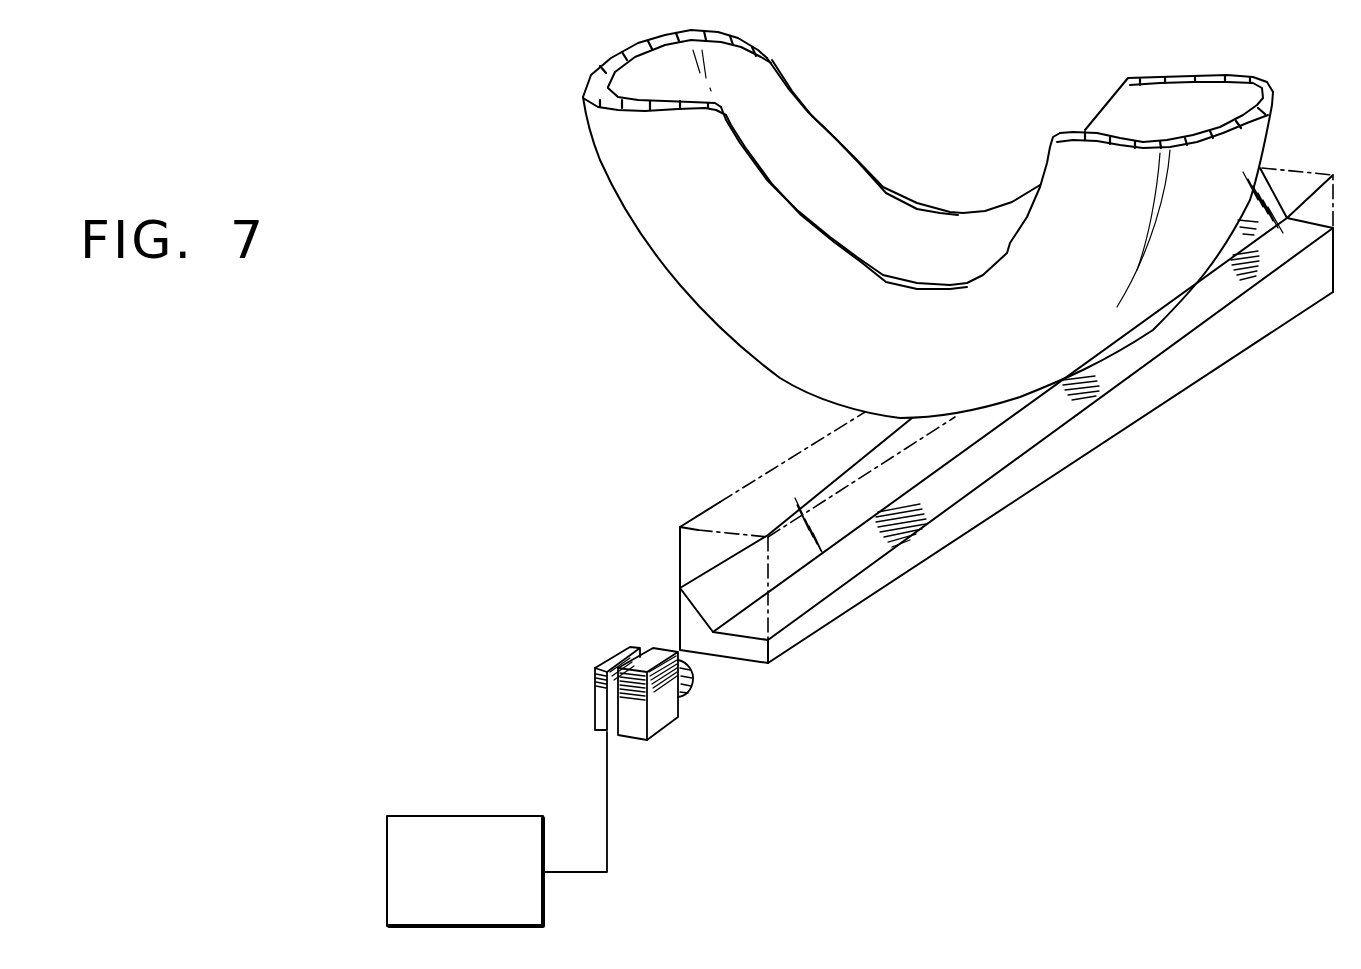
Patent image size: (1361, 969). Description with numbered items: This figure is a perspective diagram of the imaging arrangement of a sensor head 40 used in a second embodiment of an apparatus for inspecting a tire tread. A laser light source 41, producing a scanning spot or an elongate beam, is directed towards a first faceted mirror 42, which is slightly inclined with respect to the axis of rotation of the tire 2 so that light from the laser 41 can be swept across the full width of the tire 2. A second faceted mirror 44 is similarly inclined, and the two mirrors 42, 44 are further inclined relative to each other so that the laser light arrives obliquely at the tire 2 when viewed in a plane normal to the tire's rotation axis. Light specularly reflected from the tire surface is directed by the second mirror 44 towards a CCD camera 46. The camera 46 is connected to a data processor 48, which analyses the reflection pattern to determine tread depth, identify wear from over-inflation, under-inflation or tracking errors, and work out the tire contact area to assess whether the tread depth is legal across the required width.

The tire 2 is at (905, 248).
The sensor head 40 is at (905, 594).
The laser light source 41 is at (592, 697).
The first faceted mirror 42 is at (703, 583).
The second faceted mirror 44 is at (1200, 303).
The CCD camera 46 is at (680, 720).
The data processor 48 is at (487, 890).